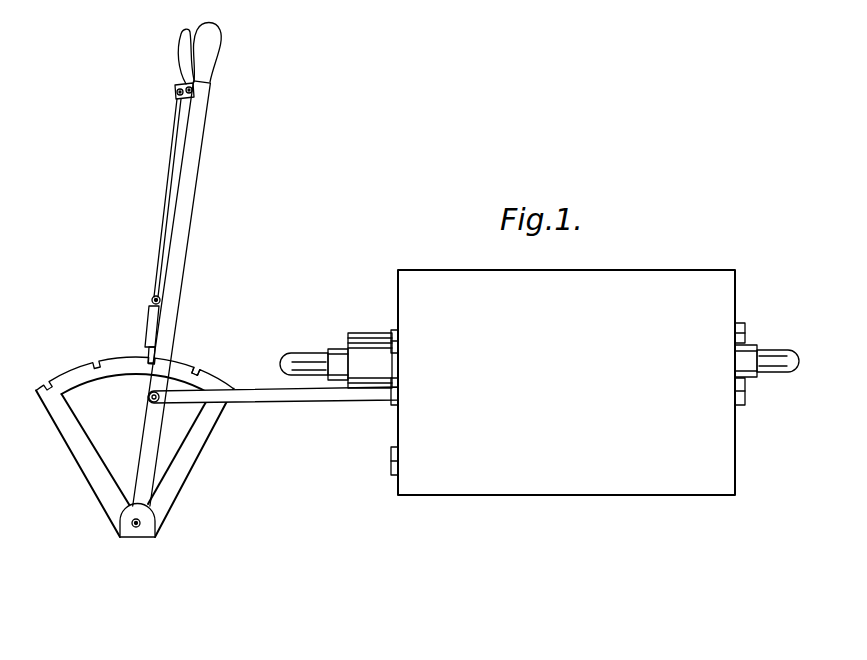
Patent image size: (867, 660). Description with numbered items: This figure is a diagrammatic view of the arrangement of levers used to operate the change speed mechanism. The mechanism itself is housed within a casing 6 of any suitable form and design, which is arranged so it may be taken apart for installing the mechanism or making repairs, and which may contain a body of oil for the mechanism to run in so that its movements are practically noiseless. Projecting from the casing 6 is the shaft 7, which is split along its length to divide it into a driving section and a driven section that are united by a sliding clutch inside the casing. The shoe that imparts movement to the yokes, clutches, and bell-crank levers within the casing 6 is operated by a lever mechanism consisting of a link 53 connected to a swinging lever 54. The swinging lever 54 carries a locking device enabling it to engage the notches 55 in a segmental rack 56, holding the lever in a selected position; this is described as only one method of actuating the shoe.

The casing 6 is at (568, 382).
The shaft 7 is at (303, 362).
The link 53 is at (303, 397).
The swinging lever 54 is at (146, 450).
The notches 55 is at (198, 371).
The segmental rack 56 is at (70, 378).